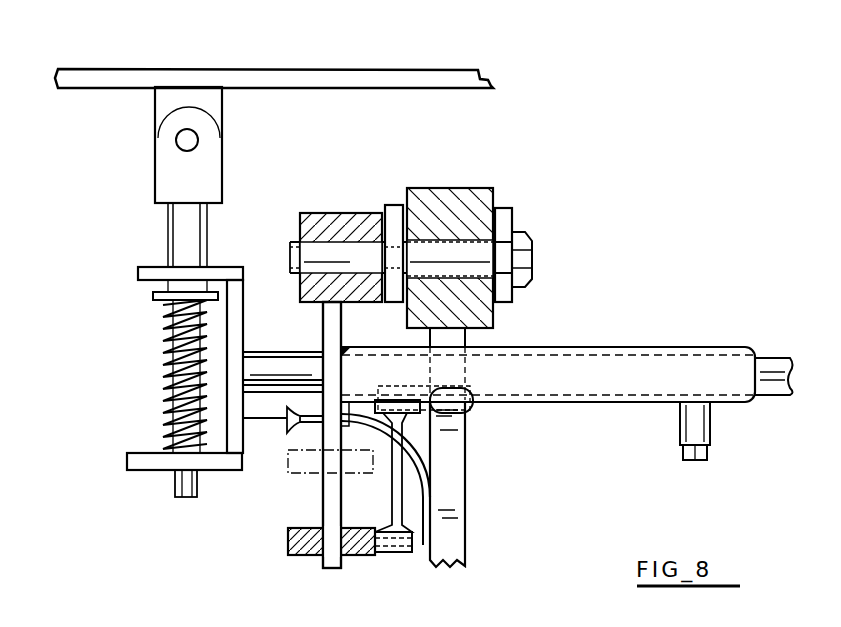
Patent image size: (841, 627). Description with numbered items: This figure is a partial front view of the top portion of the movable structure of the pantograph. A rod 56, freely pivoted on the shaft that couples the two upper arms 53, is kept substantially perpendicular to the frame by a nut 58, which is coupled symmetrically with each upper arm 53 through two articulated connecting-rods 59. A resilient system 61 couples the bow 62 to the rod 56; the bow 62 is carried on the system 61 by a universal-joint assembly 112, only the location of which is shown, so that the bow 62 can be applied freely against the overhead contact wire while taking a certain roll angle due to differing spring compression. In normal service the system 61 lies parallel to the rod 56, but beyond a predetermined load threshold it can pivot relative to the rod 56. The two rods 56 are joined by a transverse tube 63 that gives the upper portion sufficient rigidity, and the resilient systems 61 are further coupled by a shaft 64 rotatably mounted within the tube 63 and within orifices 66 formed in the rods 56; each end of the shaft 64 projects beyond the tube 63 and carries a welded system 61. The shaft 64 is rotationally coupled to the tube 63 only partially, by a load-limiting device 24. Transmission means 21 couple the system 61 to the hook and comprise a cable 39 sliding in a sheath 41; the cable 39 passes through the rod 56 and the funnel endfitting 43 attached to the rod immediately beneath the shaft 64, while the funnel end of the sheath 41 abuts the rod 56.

The bow 62 is at (318, 78).
The universal-joint assembly 112 is at (193, 140).
The resilient system 61 is at (142, 366).
The shaft 64 is at (265, 365).
The funnel endfitting 43 is at (298, 412).
The cable 39 is at (267, 422).
The rod 56 is at (323, 497).
The nut 58 is at (350, 262).
The orifice 66 is at (330, 352).
The tube 63 is at (607, 348).
The load-limiting device 24 is at (717, 430).
The transmission means 21 is at (417, 438).
The sheath 41 is at (428, 495).
The upper arm 53 is at (455, 548).
The articulated connecting-rod 59 is at (395, 500).